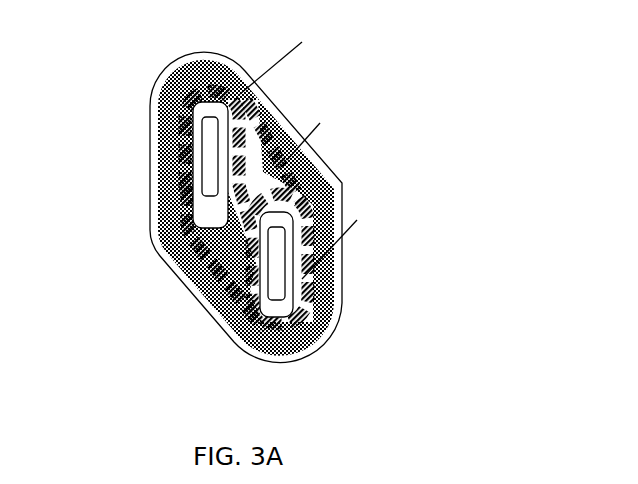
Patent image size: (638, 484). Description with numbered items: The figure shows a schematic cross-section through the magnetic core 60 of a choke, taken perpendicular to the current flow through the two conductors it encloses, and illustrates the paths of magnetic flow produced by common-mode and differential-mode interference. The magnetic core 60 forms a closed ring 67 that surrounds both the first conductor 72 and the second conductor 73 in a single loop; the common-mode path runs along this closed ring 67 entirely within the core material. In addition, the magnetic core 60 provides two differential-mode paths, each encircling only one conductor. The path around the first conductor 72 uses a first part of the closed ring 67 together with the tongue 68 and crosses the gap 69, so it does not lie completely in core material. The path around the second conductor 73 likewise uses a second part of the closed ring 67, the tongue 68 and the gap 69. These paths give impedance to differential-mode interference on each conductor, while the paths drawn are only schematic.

The magnetic core 60 is at (316, 187).
The closed ring 67 is at (167, 63).
The tongue 68 is at (246, 228).
The gap 69 is at (190, 236).
The first conductor 72 is at (205, 150).
The second conductor 73 is at (270, 288).